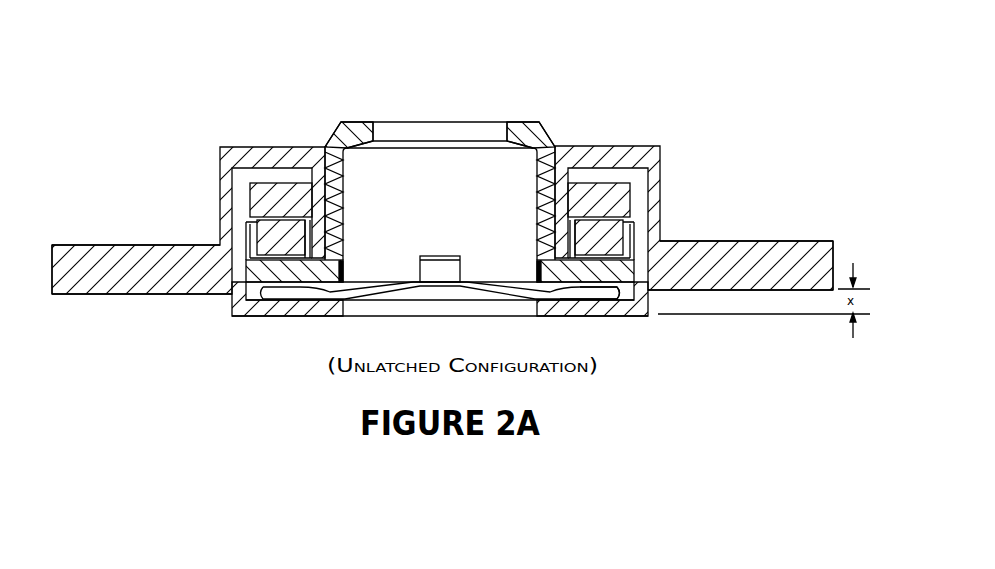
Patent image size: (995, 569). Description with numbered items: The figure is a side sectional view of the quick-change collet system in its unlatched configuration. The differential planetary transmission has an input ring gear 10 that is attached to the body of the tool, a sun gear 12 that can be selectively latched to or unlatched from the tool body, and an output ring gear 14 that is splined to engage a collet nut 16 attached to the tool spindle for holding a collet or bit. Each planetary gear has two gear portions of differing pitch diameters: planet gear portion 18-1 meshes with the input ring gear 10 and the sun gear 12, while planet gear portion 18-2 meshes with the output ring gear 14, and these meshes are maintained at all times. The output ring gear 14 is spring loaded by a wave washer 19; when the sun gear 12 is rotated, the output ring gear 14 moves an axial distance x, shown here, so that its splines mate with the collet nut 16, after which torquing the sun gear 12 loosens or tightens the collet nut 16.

The input ring gear 10 is at (230, 318).
The sun gear 12 is at (706, 239).
The output ring gear 14 is at (640, 288).
The collet nut 16 is at (545, 120).
The planet gear portion 18-1 is at (265, 190).
The planet gear portion 18-2 is at (268, 230).
The wave washer 19 is at (355, 297).